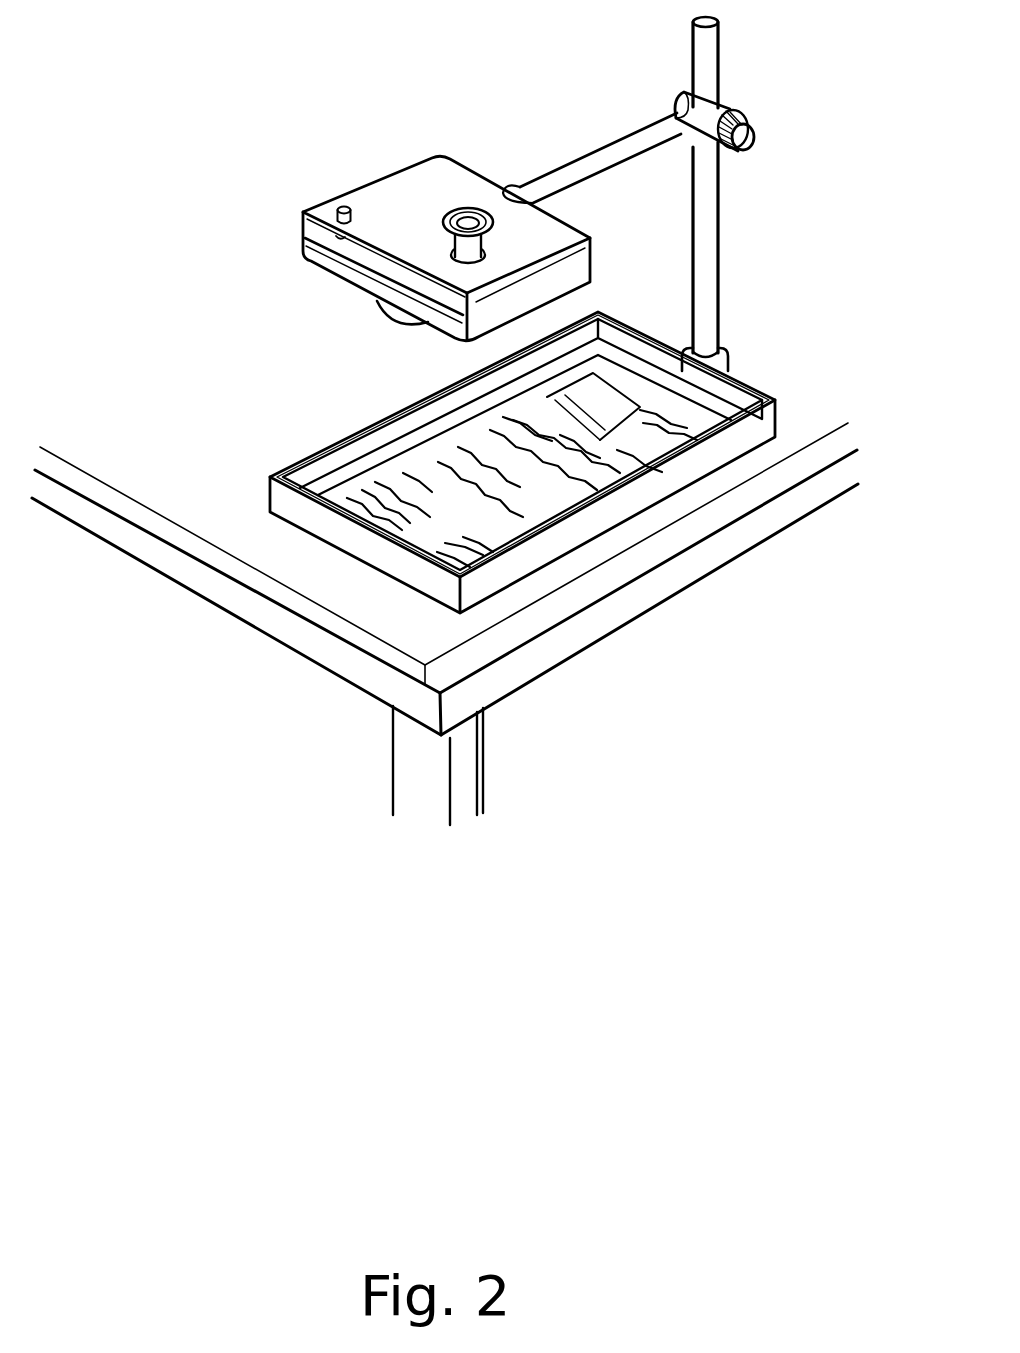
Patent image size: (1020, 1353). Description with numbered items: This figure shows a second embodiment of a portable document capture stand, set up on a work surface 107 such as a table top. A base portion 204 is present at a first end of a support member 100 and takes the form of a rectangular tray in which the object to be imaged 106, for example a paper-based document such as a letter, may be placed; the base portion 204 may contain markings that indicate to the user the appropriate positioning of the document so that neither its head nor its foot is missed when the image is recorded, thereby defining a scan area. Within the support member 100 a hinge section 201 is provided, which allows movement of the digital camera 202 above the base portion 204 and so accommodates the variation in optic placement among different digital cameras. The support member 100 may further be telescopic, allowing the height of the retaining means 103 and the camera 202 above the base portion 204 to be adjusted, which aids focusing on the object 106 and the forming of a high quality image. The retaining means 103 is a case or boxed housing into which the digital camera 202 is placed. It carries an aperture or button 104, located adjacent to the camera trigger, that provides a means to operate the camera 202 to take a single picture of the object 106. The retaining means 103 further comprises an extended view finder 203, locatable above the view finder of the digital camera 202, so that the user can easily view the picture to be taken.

The support member 100 is at (707, 238).
The hinge section 201 is at (744, 118).
The retaining means 103 is at (400, 188).
The aperture or button 104 is at (338, 213).
The extended view finder 203 is at (467, 212).
The digital camera 202 is at (372, 303).
The base portion 204 is at (290, 466).
The object to be imaged 106 is at (683, 410).
The table 107 is at (180, 478).